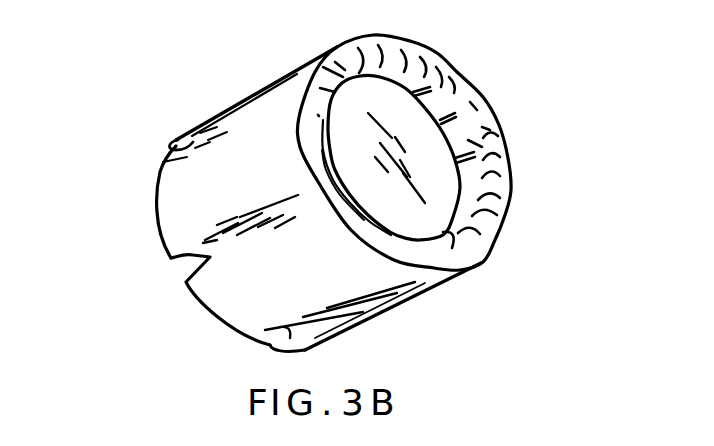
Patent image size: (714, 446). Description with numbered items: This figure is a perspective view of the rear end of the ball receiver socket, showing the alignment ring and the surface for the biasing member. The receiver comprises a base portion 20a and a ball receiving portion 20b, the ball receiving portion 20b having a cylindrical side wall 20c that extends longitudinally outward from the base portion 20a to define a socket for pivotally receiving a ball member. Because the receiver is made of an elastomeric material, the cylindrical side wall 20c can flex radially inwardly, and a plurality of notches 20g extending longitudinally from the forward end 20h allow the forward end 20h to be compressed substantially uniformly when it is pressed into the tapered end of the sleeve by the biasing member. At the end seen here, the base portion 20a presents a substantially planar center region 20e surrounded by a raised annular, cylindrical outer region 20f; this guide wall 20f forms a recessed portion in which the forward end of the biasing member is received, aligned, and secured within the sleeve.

The base portion 20a is at (271, 90).
The ball receiving portion 20b is at (217, 110).
The cylindrical side wall 20c is at (230, 293).
The planar center region 20e is at (429, 148).
The annular outer region 20f is at (454, 73).
The notches 20g is at (185, 266).
The forward end 20h is at (157, 222).